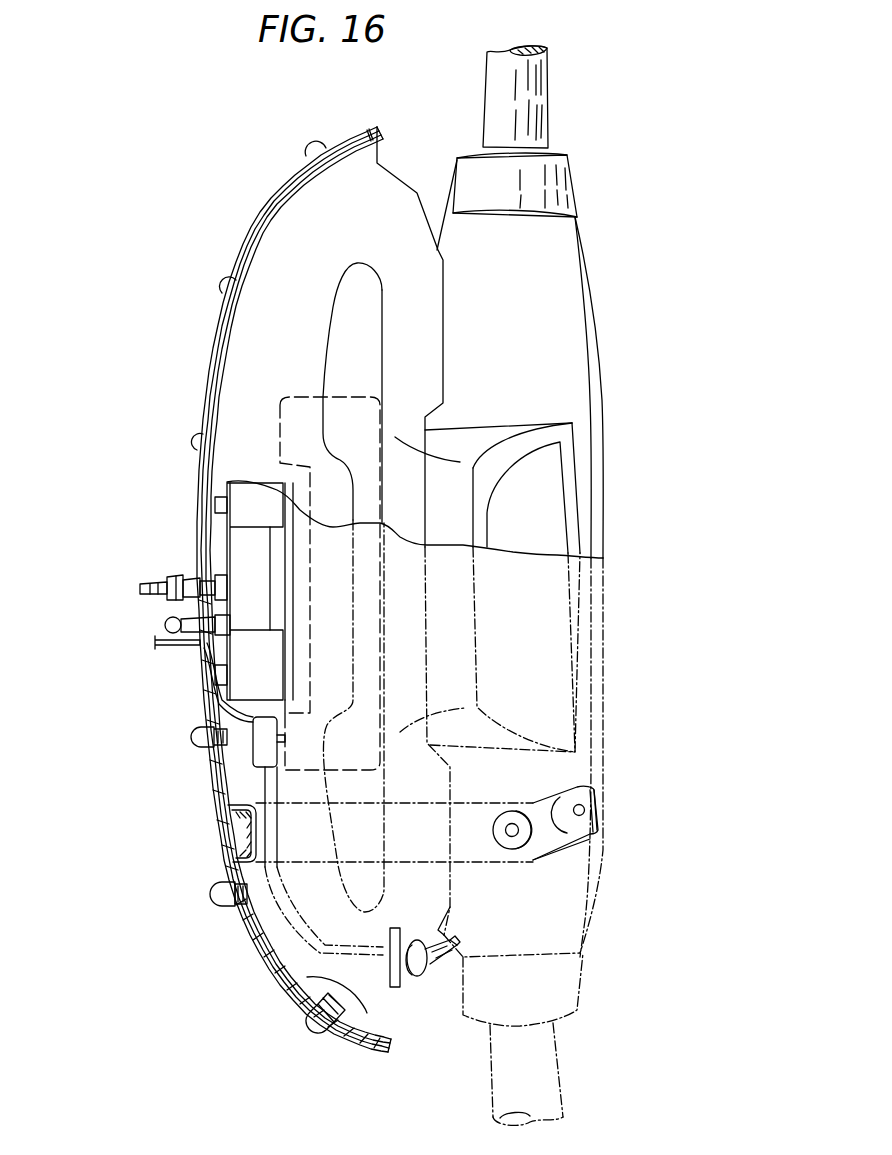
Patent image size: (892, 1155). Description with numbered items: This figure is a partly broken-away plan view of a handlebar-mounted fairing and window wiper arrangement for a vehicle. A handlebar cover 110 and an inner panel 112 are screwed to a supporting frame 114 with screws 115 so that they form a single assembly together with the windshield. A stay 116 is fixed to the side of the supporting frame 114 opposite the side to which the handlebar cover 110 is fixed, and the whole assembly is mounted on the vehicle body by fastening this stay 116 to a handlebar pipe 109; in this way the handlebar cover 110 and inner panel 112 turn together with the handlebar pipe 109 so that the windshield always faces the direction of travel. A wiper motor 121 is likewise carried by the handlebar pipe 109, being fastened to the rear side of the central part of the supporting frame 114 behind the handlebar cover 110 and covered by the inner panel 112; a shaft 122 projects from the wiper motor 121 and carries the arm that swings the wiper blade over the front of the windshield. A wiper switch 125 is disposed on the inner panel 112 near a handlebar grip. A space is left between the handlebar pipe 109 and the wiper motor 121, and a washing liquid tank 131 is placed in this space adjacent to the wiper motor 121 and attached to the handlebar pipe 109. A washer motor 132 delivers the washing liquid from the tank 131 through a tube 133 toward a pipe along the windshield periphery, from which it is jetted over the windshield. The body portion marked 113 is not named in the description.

The handlebar pipe 109 is at (528, 105).
The handlebar cover 110 is at (270, 180).
The inner panel 112 is at (398, 193).
The housing body 113 is at (562, 283).
The supporting frame 114 is at (236, 802).
The screws 115 is at (222, 902).
The stay 116 is at (487, 848).
The wiper motor 121 is at (250, 548).
The shaft 122 is at (195, 573).
The wiper switch 125 is at (434, 975).
The washing liquid tank 131 is at (340, 570).
The washer motor 132 is at (258, 750).
The tube 133 is at (168, 645).